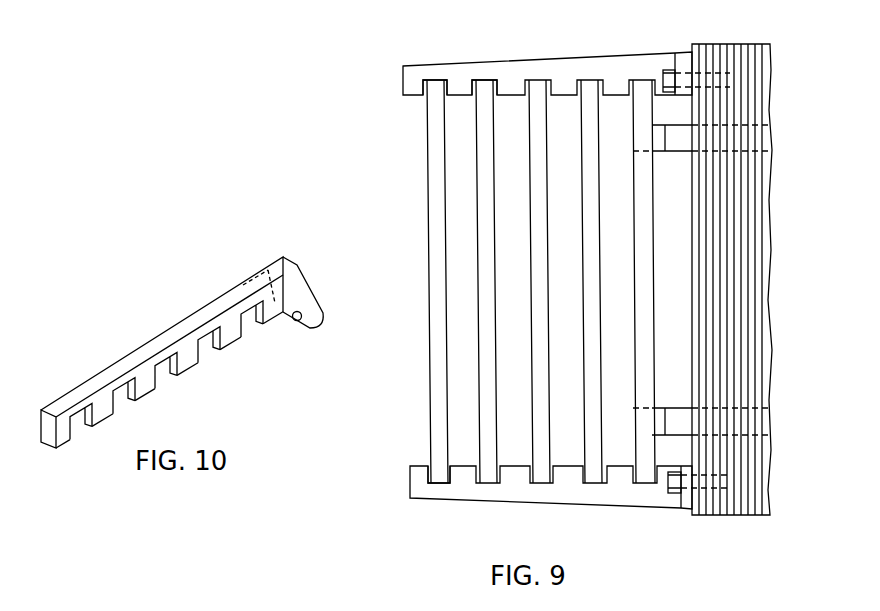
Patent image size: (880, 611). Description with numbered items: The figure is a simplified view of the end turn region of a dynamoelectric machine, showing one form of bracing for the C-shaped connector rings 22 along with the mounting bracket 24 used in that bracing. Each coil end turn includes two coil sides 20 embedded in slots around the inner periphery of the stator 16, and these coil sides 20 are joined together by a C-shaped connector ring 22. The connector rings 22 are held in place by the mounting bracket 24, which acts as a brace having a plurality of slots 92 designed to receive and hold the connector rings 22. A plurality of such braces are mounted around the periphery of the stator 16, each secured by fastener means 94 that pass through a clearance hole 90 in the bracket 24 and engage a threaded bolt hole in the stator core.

In FIG. 9, the stator 16 is at (713, 44).
In FIG. 9, the coil sides 20 is at (676, 140).
In FIG. 9, the C-shaped connector ring 22 is at (485, 337).
In FIG. 9, the mounting bracket 24 is at (536, 60).
In FIG. 10, the mounting bracket 24 is at (162, 352).
In FIG. 10, the clearance hole 90 is at (297, 322).
In FIG. 9, the slots 92 is at (481, 79).
In FIG. 10, the slots 92 is at (162, 383).
In FIG. 9, the fastener means 94 is at (666, 72).